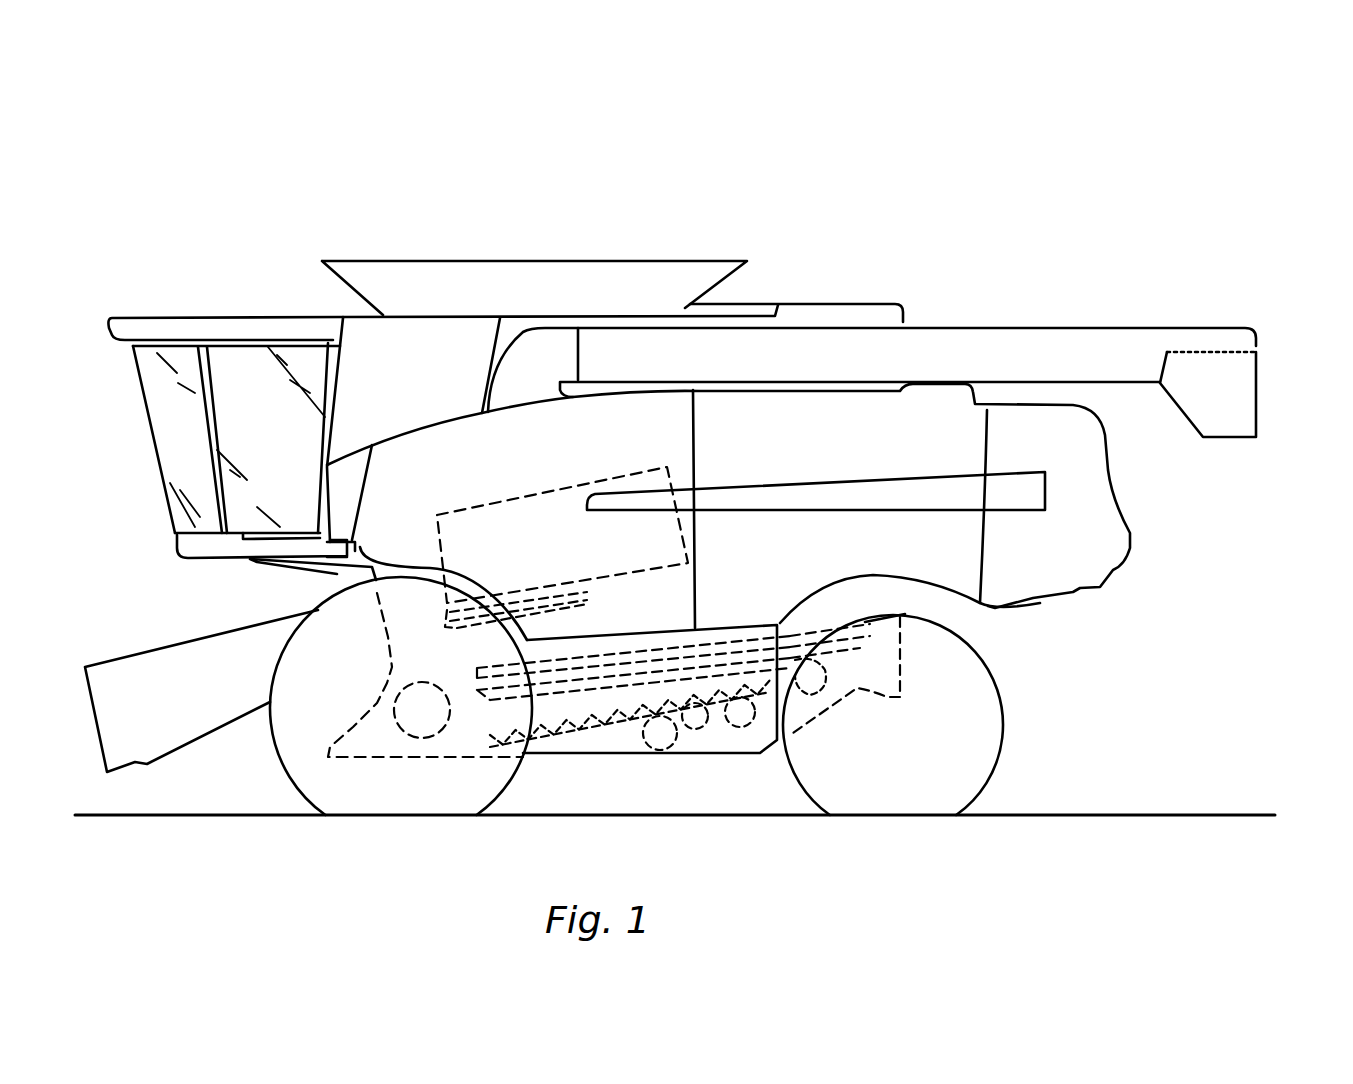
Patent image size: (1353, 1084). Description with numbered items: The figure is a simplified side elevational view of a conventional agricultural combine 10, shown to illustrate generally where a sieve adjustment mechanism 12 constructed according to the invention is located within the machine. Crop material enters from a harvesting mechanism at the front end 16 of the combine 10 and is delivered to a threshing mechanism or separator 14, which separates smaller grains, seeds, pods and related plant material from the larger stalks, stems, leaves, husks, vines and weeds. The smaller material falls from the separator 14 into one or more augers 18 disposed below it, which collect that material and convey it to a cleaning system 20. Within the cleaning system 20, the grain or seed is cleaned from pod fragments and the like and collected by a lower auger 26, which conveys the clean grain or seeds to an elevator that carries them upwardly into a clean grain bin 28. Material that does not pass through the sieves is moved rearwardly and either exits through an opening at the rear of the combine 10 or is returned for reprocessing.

The agricultural combine 10 is at (1270, 197).
The sieve adjustment mechanism 12 is at (750, 625).
The threshing mechanism or separator 14 is at (537, 493).
The front end 16 is at (103, 663).
The augers 18 is at (450, 630).
The cleaning system 20 is at (867, 622).
The lower auger 26 is at (592, 733).
The clean grain bin 28 is at (732, 262).